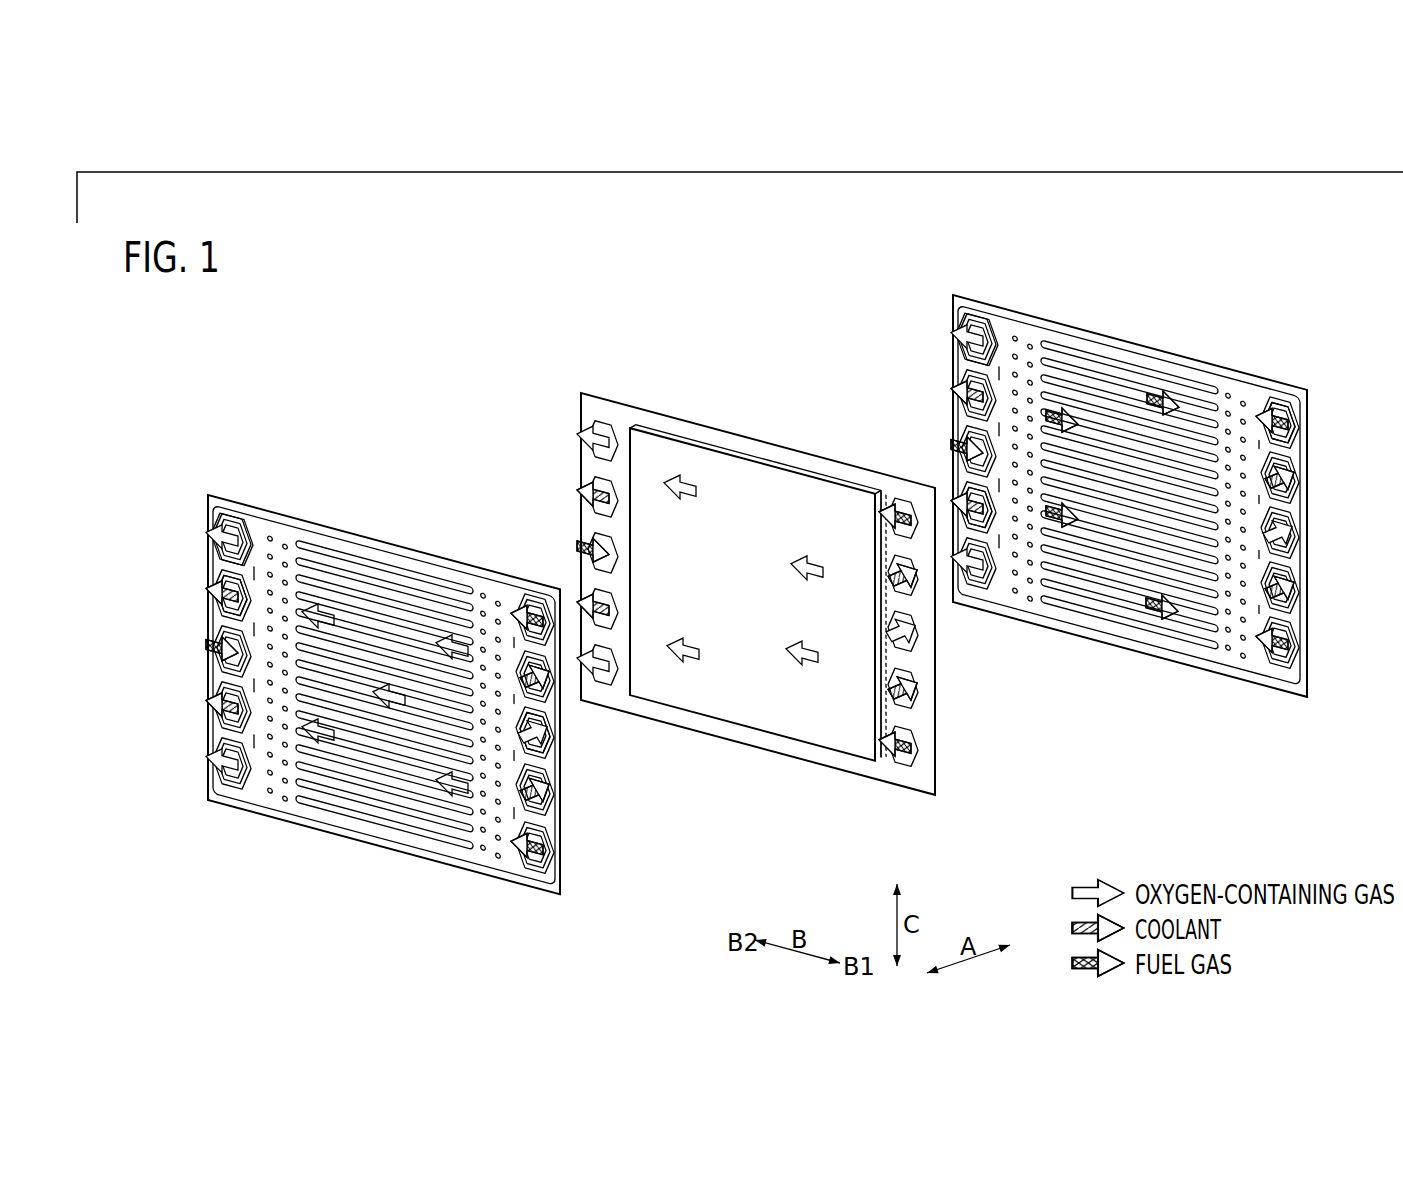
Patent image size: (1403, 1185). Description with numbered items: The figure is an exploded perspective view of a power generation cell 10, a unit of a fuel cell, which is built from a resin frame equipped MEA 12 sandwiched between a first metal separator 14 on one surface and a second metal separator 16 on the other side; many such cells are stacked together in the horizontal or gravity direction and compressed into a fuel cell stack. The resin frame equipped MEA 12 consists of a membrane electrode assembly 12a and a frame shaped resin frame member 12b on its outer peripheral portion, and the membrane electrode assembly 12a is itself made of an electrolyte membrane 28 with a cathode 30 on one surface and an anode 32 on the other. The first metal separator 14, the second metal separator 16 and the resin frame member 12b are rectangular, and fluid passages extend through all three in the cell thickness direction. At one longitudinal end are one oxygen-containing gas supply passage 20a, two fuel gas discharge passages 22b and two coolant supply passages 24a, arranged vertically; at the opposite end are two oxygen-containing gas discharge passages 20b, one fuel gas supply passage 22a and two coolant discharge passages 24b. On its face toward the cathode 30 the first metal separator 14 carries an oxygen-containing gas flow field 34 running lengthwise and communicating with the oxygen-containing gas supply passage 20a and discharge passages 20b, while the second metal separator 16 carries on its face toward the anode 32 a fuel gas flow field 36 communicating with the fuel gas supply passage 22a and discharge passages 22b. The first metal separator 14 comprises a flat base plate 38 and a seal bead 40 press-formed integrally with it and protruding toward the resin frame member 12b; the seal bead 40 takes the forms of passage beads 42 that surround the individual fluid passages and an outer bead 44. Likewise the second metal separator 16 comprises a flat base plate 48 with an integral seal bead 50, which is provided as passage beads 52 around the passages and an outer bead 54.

The power generation cell 10 is at (218, 358).
The resin frame equipped MEA 12 is at (862, 363).
The membrane electrode assembly 12a is at (791, 487).
The resin frame member 12b is at (843, 473).
The first metal separator 14 is at (401, 543).
The second metal separator 16 is at (1145, 346).
The oxygen-containing gas supply passage 20a is at (540, 733).
The oxygen-containing gas discharge passage 20b is at (222, 537).
The fuel gas supply passage 22a is at (225, 645).
The fuel gas discharge passage 22b is at (527, 606).
The coolant supply passage 24a is at (546, 695).
The coolant discharge passage 24b is at (222, 590).
The electrolyte membrane 28 is at (712, 470).
The cathode 30 is at (676, 462).
The anode 32 is at (757, 452).
The oxygen-containing gas flow field 34 is at (434, 590).
The fuel gas flow field 36 is at (1197, 416).
The base plate 38 is at (277, 538).
The seal bead 40 is at (238, 512).
The passage bead 42 is at (225, 613).
The outer bead 44 is at (344, 543).
The base plate 48 is at (1023, 338).
The seal bead 50 is at (990, 328).
The passage bead 52 is at (1266, 400).
The outer bead 54 is at (1088, 342).